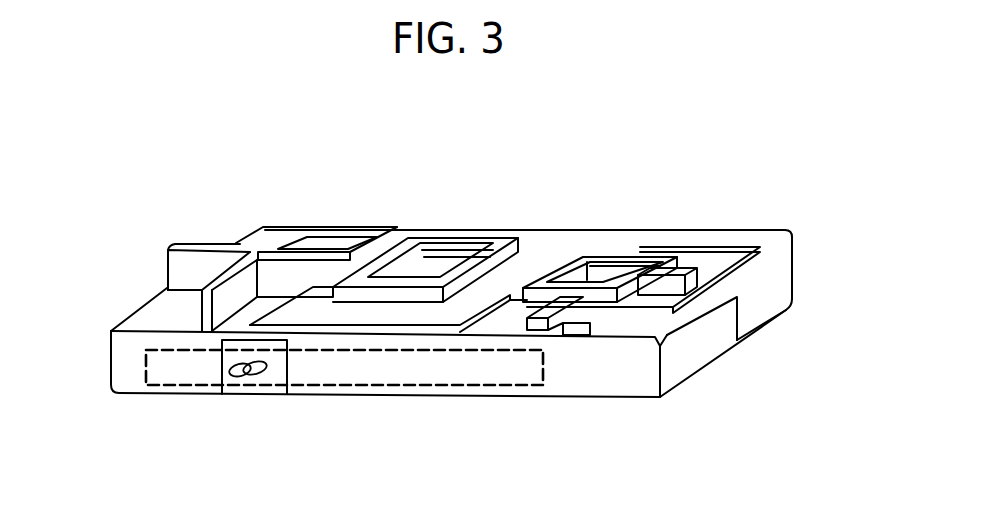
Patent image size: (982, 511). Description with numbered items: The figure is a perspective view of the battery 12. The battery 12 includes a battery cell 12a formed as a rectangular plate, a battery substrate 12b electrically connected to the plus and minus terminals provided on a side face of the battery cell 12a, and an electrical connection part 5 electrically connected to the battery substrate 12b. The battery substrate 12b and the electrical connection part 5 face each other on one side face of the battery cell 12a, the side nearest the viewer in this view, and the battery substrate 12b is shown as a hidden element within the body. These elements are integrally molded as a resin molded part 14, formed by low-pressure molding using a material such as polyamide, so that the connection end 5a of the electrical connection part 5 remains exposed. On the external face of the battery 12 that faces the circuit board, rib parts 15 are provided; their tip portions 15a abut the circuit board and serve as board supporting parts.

The battery 12 is at (148, 285).
The battery cell 12a is at (770, 311).
The battery substrate 12b is at (467, 390).
The resin molded part 14 is at (598, 378).
The rib parts 15 is at (303, 273).
The tip portions 15a is at (203, 244).
The electrical connection part 5 is at (277, 373).
The connection end 5a is at (240, 376).